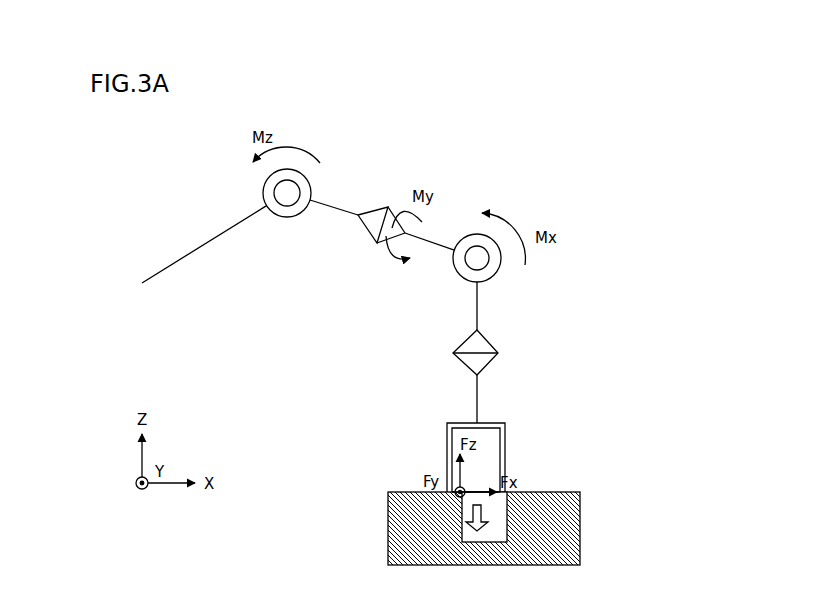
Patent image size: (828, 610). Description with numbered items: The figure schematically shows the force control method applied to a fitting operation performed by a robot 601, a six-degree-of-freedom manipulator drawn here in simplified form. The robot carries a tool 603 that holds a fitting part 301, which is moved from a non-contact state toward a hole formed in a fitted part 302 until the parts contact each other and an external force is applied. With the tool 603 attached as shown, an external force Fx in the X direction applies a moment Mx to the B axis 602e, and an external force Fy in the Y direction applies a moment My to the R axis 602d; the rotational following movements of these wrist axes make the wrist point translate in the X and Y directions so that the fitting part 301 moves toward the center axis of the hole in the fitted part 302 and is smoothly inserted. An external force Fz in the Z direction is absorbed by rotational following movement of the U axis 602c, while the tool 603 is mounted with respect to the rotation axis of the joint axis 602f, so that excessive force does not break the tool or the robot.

The robot 601 is at (195, 247).
The U axis 602c is at (293, 217).
The R axis 602d is at (373, 205).
The B axis 602e is at (458, 275).
The T axis 602f is at (483, 340).
The tool 603 is at (445, 443).
The fitting part 301 is at (490, 453).
The fitted part 302 is at (580, 493).